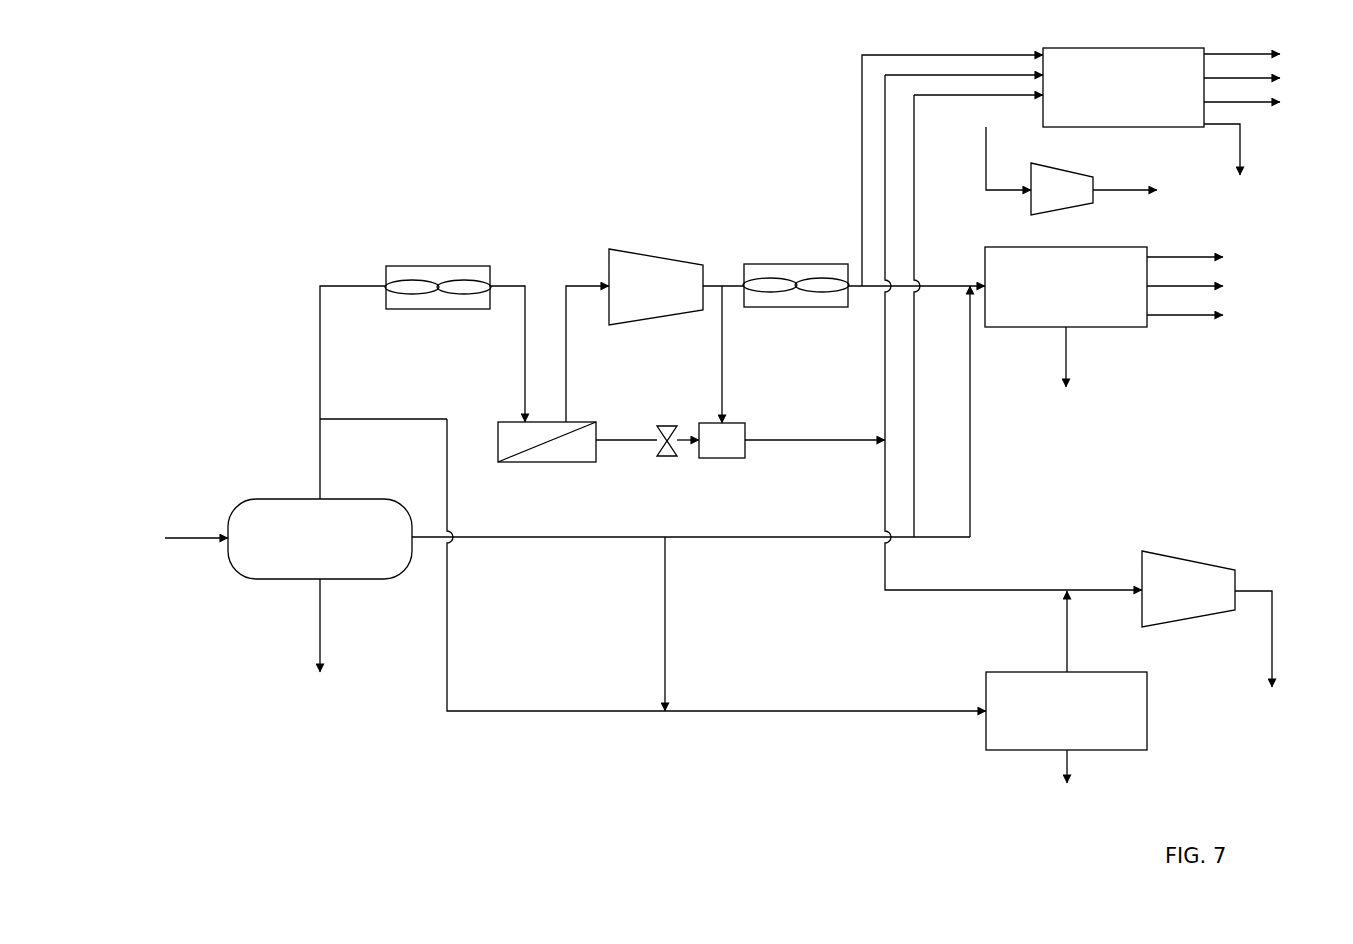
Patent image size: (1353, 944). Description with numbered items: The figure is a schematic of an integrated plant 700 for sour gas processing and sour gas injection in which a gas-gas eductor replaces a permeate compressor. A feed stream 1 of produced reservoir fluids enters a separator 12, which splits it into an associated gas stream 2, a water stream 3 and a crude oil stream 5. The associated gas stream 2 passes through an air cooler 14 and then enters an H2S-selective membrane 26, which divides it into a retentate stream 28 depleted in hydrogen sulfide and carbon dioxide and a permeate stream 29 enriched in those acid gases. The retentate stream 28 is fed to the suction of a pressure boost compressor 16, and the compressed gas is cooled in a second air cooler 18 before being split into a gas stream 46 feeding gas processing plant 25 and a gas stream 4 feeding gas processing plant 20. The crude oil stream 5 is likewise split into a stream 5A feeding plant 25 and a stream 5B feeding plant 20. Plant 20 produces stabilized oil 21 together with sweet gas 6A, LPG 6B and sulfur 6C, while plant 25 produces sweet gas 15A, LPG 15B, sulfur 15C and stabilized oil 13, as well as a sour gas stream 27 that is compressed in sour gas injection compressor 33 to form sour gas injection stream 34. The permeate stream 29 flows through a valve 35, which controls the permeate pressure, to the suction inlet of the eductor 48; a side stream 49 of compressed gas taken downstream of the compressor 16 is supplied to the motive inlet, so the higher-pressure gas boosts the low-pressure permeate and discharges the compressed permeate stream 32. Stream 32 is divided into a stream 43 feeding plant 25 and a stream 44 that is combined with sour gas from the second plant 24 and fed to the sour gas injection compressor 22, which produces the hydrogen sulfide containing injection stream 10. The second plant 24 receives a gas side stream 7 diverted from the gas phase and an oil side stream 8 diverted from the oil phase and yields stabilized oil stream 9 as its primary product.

The integrated plant 700 is at (372, 100).
The separator 12 is at (320, 539).
The feed stream 1 is at (185, 538).
The water stream 3 is at (319, 640).
The associated gas stream 2 is at (320, 436).
The air cooler 14 is at (440, 266).
The pressure boost compressor 16 is at (676, 287).
The retentate stream 28 is at (566, 368).
The H2S-selective membrane 26 is at (512, 421).
The side stream of compressed gas 49 is at (722, 355).
The permeate stream 29 is at (636, 440).
The valve 35 is at (665, 457).
The gas-gas eductor 48 is at (722, 440).
The compressed permeate stream 32 is at (792, 440).
The second air cooler 18 is at (798, 264).
The gas stream to plant 25 46 is at (862, 92).
The permeate split stream 43 is at (885, 177).
The gas stream to plant 20 4 is at (945, 286).
The oil stream portion 5A is at (914, 415).
The oil stream portion 5B is at (970, 478).
The crude oil stream 5 is at (748, 537).
The side stream 7 is at (447, 488).
The side stream 8 is at (665, 622).
The second plant 24 is at (1066, 711).
The permeate split stream 44 is at (1013, 591).
The sour gas injection compressor 22 is at (1188, 589).
The sour gas injection stream 10 is at (1260, 655).
The stabilized oil stream 9 is at (1066, 783).
The gas processing plant 25 is at (1123, 87).
The sweet gas product stream 15A is at (1268, 55).
The LPG product stream 15B is at (1267, 79).
The sulfur product stream 15C is at (1267, 103).
The stabilized oil stream 13 is at (1228, 163).
The sour gas stream 27 is at (986, 158).
The sour gas injection compressor 33 is at (1062, 189).
The sour gas injection stream 34 is at (1142, 190).
The gas processing plant 20 is at (1066, 287).
The sweet gas product stream 6A is at (1203, 258).
The LPG product stream 6B is at (1203, 287).
The sulfur product stream 6C is at (1203, 316).
The stabilized oil 21 is at (1066, 372).